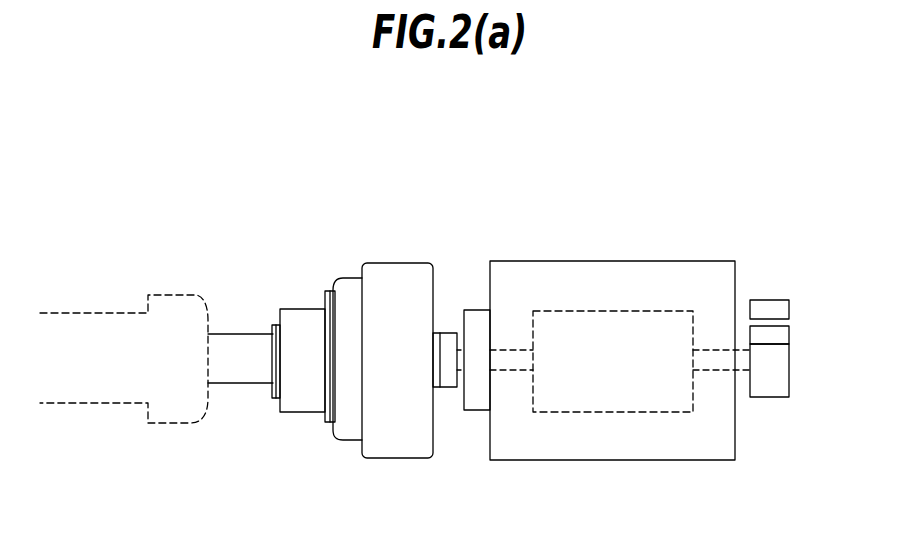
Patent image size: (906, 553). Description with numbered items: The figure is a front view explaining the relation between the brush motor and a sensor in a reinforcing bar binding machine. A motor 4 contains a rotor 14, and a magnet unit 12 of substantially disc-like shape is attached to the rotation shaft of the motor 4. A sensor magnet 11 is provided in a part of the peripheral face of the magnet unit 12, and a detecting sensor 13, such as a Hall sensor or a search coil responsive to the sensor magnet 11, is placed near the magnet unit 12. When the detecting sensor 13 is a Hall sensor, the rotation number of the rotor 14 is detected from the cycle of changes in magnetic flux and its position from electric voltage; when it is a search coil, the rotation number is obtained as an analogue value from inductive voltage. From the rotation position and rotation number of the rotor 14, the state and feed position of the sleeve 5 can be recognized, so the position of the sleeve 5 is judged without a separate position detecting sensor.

The sleeve 5 is at (83, 347).
The motor 4 is at (612, 272).
The rotor 14 is at (607, 400).
The detecting sensor 13 is at (770, 307).
The sensor magnet 11 is at (772, 335).
The magnet unit 12 is at (780, 377).